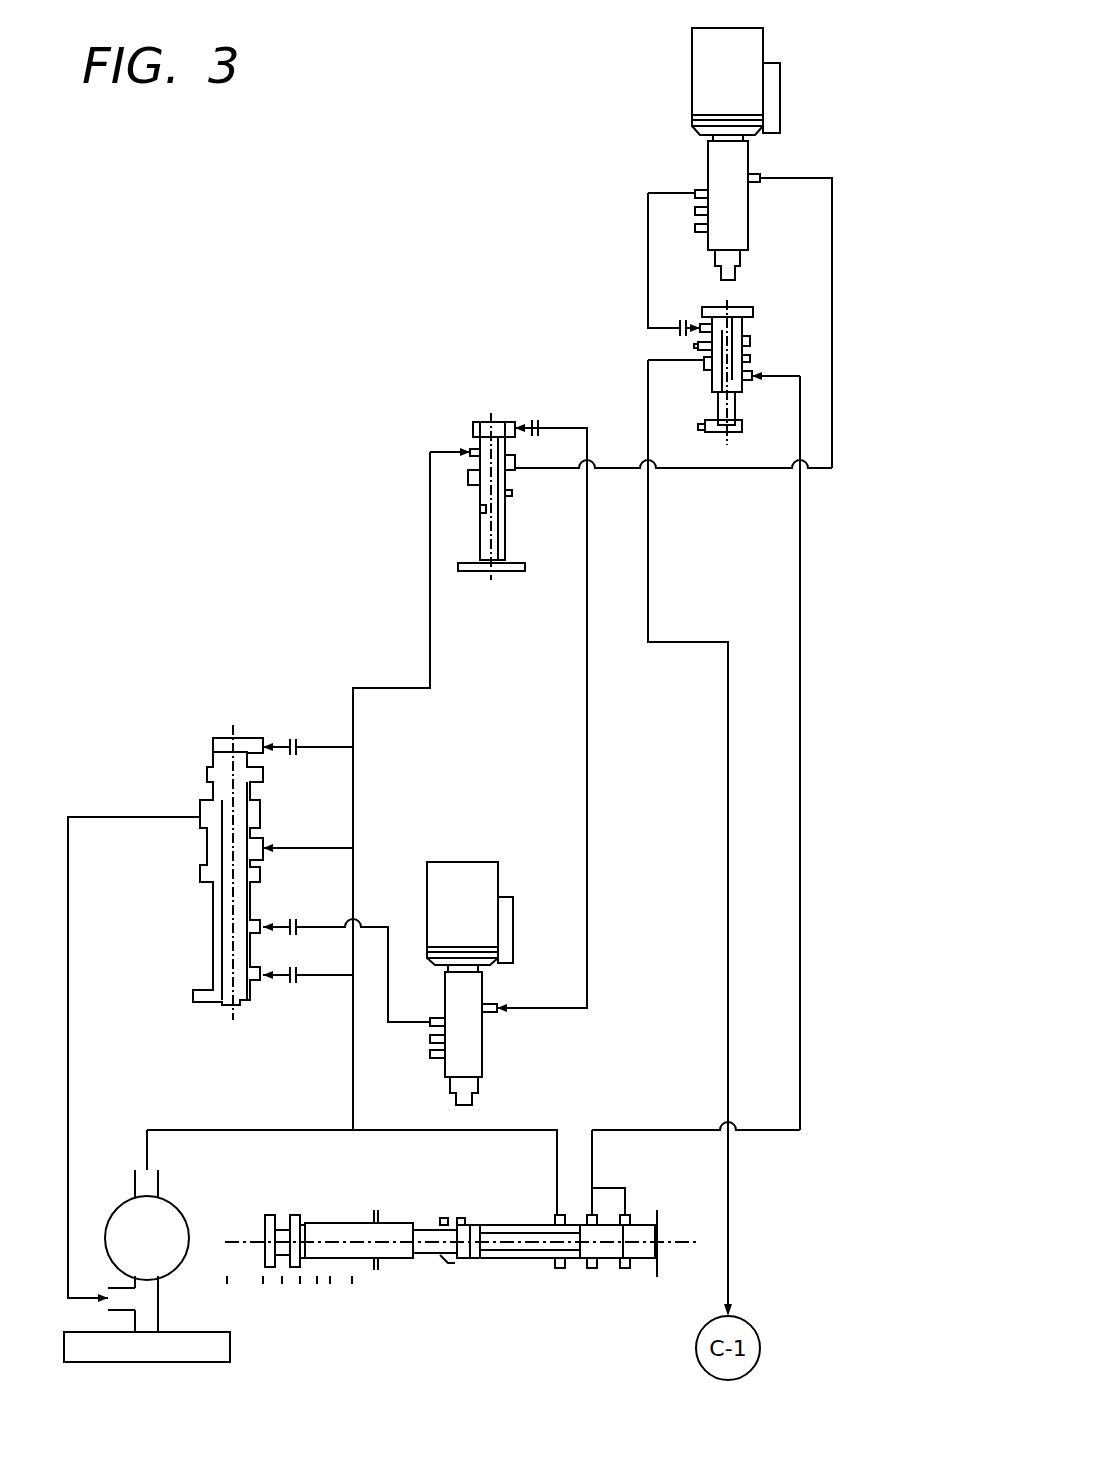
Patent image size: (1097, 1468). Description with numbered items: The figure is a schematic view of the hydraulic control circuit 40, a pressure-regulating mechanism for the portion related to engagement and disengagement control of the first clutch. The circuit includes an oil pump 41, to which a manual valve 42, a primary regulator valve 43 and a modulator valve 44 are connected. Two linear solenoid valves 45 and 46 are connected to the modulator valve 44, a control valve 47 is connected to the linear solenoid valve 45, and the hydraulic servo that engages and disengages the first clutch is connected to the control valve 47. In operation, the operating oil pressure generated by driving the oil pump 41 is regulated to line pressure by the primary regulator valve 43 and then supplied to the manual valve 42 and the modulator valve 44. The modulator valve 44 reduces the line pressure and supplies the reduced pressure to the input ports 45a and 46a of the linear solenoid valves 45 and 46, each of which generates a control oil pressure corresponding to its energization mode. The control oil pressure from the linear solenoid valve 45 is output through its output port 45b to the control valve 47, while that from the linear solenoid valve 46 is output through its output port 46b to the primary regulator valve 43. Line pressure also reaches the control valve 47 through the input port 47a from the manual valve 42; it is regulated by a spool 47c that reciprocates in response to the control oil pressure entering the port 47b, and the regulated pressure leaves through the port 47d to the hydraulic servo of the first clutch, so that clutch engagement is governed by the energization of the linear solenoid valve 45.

The hydraulic control circuit 40 is at (222, 286).
The oil pump 41 is at (122, 1210).
The manual valve 42 is at (510, 1224).
The primary regulator valve 43 is at (213, 740).
The modulator valve 44 is at (483, 422).
The linear solenoid valve 45 is at (692, 52).
The input port 45a is at (755, 174).
The output port 45b is at (698, 190).
The linear solenoid valve 46 is at (482, 862).
The input port 46a is at (490, 1004).
The output port 46b is at (430, 1026).
The control valve 47 is at (740, 310).
The input port 47a is at (752, 372).
The port 47b is at (702, 324).
The spool 47c is at (734, 396).
The port 47d is at (706, 364).